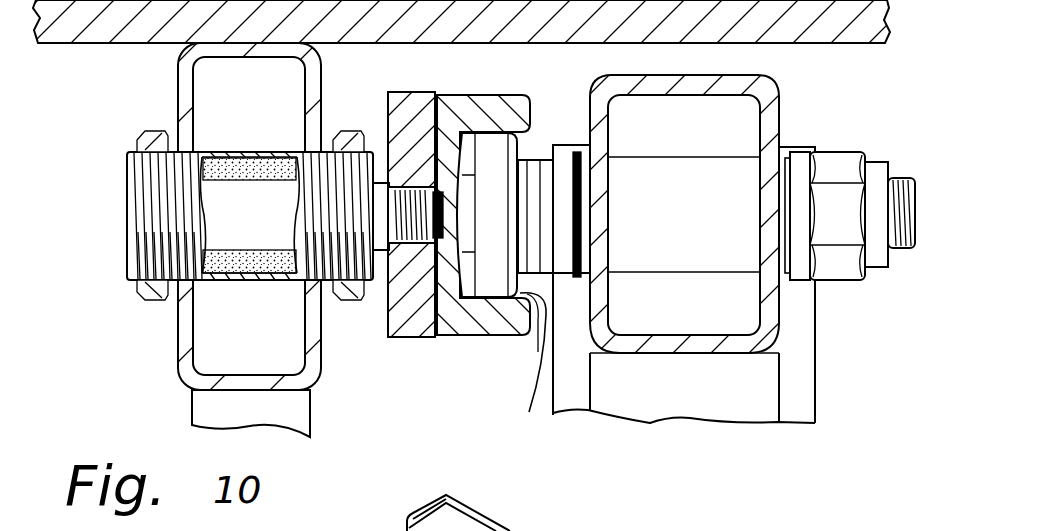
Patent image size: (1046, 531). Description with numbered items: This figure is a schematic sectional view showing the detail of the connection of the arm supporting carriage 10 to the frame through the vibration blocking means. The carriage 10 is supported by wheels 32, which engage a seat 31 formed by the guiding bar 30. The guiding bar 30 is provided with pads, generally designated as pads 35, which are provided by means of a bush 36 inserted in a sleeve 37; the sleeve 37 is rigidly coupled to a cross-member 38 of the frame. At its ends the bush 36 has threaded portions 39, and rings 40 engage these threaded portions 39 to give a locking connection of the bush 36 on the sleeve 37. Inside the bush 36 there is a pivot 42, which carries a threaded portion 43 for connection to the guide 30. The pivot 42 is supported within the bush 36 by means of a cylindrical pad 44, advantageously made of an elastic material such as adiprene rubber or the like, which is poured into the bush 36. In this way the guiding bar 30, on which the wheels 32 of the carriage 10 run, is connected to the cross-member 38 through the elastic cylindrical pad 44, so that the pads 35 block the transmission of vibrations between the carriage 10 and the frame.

The carriage 10 is at (790, 119).
The guiding bar 30 is at (470, 110).
The seat 31 is at (529, 369).
The wheels 32 is at (490, 275).
The pads 35 is at (128, 298).
The bush 36 is at (252, 262).
The sleeve 37 is at (252, 150).
The cross-member 38 is at (213, 240).
The threaded portions 39 is at (145, 215).
The rings 40 is at (150, 136).
The pivot 42 is at (220, 200).
The threaded portion 43 is at (415, 245).
The cylindrical pad 44 is at (222, 168).